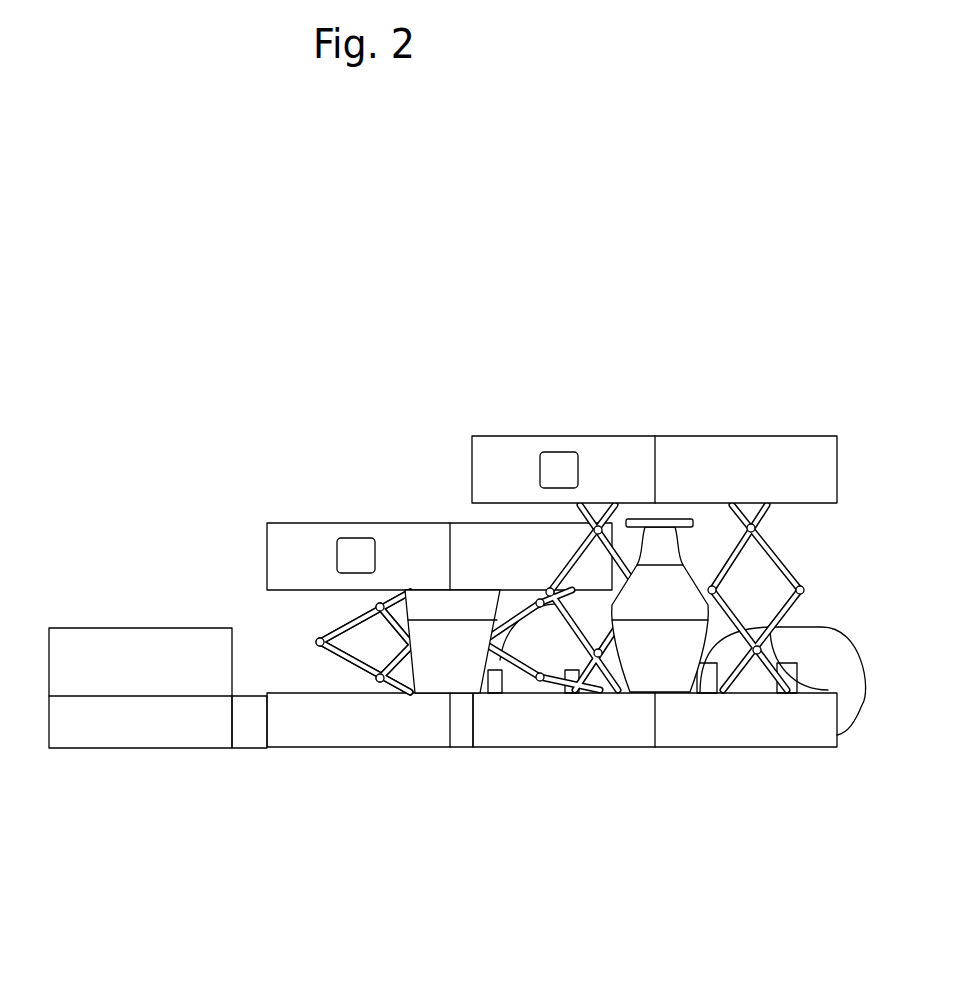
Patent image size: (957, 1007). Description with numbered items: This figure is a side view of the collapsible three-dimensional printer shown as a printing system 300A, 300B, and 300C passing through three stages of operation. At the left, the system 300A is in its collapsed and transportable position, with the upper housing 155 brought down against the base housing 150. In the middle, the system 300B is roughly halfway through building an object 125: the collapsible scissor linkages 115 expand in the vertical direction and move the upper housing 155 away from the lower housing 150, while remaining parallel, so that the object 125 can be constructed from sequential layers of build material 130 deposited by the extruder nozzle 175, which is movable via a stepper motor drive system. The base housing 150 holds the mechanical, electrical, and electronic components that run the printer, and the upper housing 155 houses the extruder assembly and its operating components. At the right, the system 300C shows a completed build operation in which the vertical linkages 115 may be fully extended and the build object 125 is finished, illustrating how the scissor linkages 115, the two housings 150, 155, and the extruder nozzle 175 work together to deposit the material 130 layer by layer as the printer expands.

The collapsible scissor linkages 115 is at (576, 539).
The object 125 is at (452, 662).
The build material 130 is at (773, 528).
The base housing 150 is at (443, 746).
The upper housing 155 is at (428, 555).
The extruder nozzle 175 is at (400, 590).
The 3D printing system in collapsed position 300A is at (127, 765).
The 3D printing system mid-build 300B is at (382, 788).
The 3D printing system with completed build 300C is at (620, 788).